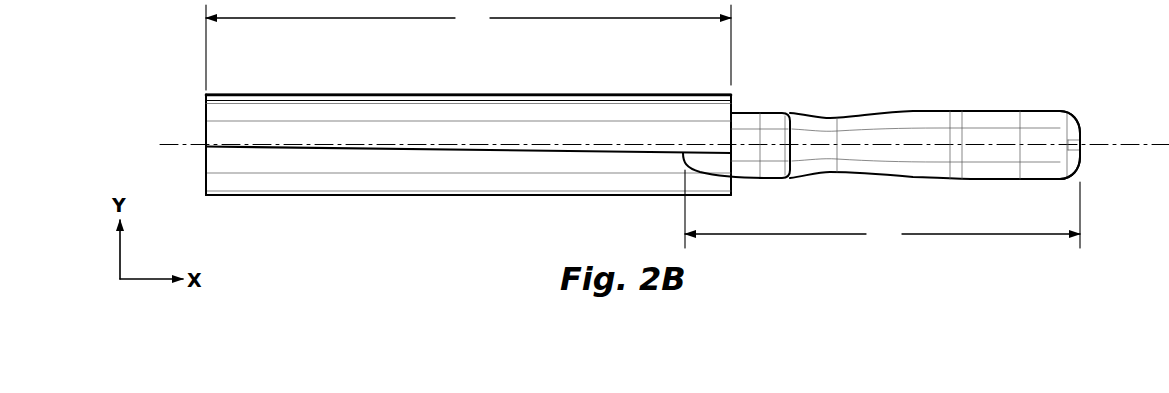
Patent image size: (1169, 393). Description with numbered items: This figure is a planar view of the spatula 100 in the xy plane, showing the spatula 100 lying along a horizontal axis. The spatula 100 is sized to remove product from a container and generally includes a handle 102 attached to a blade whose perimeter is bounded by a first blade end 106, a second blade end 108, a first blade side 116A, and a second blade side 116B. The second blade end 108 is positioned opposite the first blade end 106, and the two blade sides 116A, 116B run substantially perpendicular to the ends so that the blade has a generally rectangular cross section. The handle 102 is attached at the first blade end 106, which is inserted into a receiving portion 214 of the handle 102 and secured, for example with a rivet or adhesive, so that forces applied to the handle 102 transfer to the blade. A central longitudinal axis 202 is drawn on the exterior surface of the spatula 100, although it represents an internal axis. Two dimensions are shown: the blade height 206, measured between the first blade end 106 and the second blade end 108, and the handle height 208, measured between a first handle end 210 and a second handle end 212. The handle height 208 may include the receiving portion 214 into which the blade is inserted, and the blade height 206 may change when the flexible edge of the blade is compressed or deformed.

The spatula 100 is at (862, 44).
The handle 102 is at (921, 111).
The first blade end 106 is at (733, 185).
The second blade end 108 is at (206, 112).
The first blade side 116A is at (405, 90).
The second blade side 116B is at (413, 200).
The central longitudinal axis 202 is at (199, 148).
The blade height 206 is at (468, 47).
The handle height 208 is at (882, 209).
The first handle end 210 is at (683, 153).
The second handle end 212 is at (1082, 138).
The receiving portion 214 is at (712, 168).